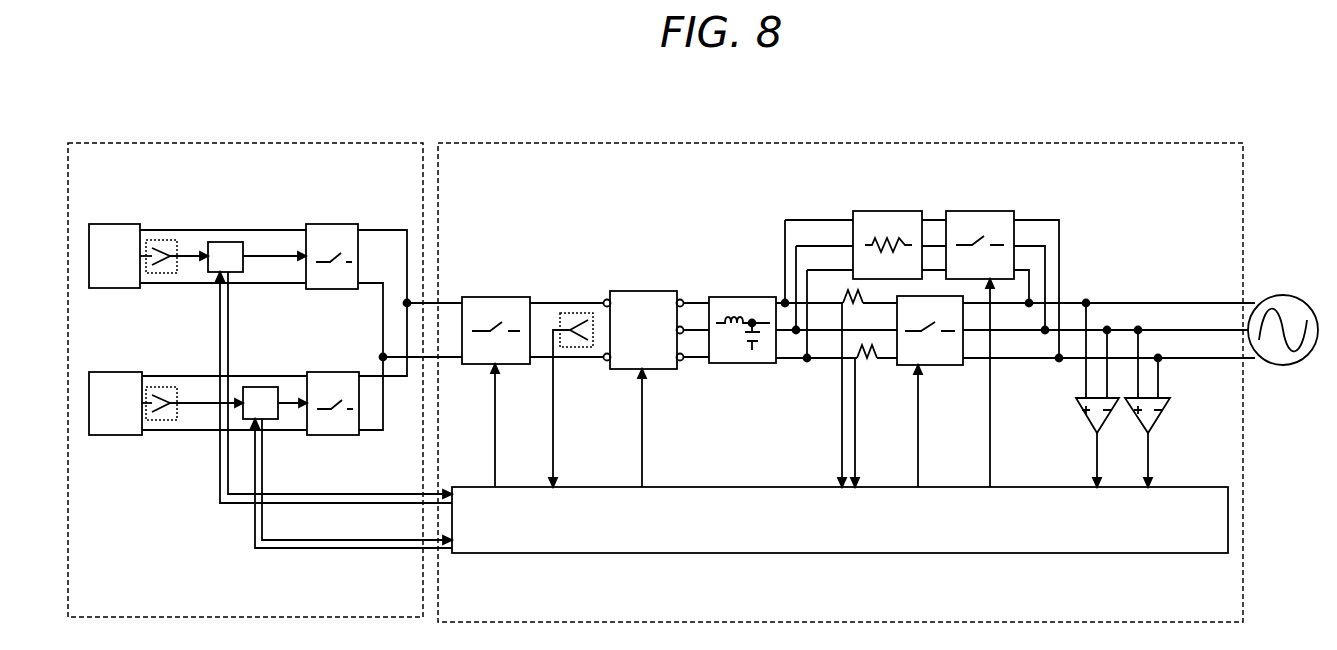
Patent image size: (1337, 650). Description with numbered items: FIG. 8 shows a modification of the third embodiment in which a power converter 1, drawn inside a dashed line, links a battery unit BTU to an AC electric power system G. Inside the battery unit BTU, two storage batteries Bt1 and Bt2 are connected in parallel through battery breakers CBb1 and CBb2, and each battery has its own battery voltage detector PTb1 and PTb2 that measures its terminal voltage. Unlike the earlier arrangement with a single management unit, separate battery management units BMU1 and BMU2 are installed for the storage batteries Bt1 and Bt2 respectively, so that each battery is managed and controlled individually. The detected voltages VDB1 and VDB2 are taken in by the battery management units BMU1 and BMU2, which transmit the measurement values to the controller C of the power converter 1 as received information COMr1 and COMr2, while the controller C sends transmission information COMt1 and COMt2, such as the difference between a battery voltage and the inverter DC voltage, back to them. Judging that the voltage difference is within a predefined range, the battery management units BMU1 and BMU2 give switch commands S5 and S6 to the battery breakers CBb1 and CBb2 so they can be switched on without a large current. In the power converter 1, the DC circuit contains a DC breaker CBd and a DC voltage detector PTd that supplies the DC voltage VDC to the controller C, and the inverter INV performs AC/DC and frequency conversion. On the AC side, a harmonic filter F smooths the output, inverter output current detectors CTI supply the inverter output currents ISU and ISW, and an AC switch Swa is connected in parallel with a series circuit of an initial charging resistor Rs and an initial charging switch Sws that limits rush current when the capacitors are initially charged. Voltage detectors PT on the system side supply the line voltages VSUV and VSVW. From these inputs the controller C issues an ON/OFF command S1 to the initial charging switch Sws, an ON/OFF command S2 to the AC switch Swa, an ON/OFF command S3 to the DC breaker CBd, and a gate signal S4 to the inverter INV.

The battery unit BTU is at (152, 143).
The power converter 1 is at (548, 143).
The storage battery Bt1 is at (112, 224).
The battery voltage detector PTb1 is at (160, 240).
The battery management unit BMU1 is at (226, 242).
The switch command S5 is at (272, 256).
The battery breaker CBb1 is at (332, 224).
The voltage of the storage battery VDB1 is at (188, 258).
The storage battery Bt2 is at (112, 372).
The battery voltage detector PTb2 is at (160, 387).
The battery management unit BMU2 is at (260, 387).
The switch command S6 is at (287, 403).
The battery breaker CBb2 is at (332, 372).
The voltage of the storage battery VDB2 is at (195, 405).
The received information COMr1 is at (280, 494).
The transmission information COMt1 is at (320, 503).
The received information COMr2 is at (273, 540).
The transmission information COMt2 is at (356, 548).
The DC breaker CBd is at (497, 297).
The DC voltage detector PTd is at (578, 313).
The DC voltage VDC is at (573, 408).
The inverter INV is at (642, 291).
The harmonic filter F is at (742, 297).
The ON/OFF command S3 is at (498, 443).
The gate signal S4 is at (645, 443).
The initial charging resistor Rs is at (887, 211).
The initial charging switch Sws is at (980, 211).
The ON/OFF command S1 is at (993, 443).
The inverter output current detectors CTI is at (838, 308).
The inverter output current ISU is at (824, 395).
The inverter output current ISW is at (872, 422).
The AC switch Swa is at (951, 365).
The ON/OFF command S2 is at (915, 440).
The voltage detectors PT is at (1110, 397).
The line voltage VSUV is at (1070, 460).
The line voltage VSVW is at (1174, 460).
The AC electric power system G is at (1285, 295).
The controller C is at (1168, 554).